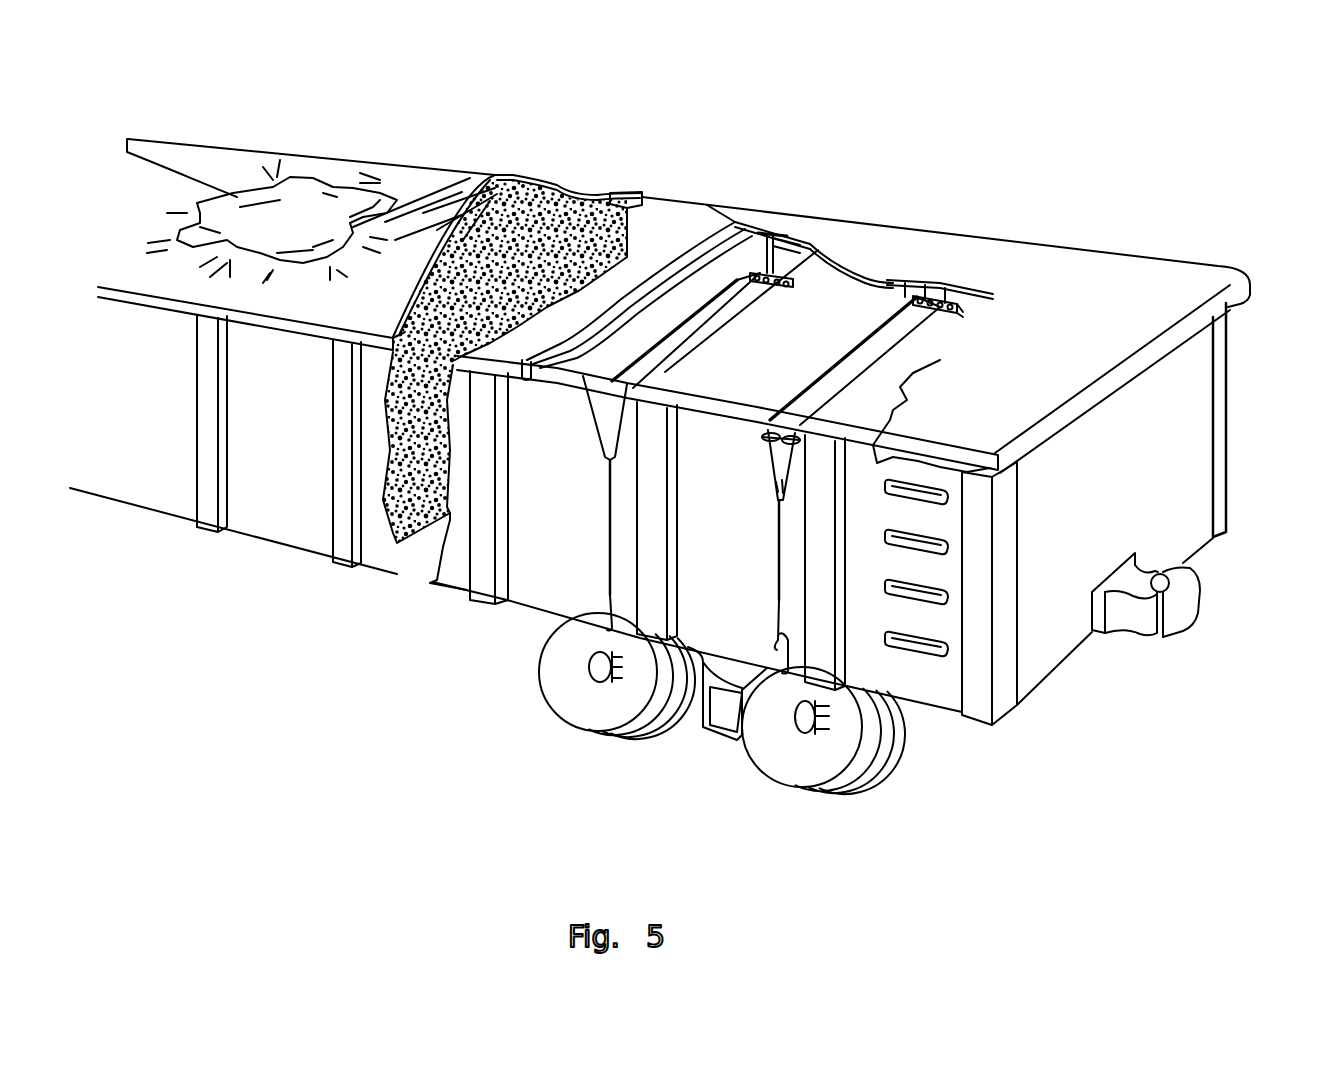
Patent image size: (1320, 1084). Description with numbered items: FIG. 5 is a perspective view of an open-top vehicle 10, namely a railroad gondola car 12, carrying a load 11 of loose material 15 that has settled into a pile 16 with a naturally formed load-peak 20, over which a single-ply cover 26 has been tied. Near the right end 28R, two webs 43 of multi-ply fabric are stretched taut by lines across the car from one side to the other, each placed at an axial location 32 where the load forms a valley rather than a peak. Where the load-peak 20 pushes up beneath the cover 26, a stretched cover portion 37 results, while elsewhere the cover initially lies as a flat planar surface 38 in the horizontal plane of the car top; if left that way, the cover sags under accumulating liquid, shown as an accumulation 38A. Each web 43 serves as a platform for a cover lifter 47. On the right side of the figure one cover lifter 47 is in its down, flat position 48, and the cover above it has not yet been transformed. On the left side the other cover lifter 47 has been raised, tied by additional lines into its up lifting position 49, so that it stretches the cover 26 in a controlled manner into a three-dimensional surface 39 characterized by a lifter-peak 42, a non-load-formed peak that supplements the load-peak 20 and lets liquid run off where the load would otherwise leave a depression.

The open-top vehicle 10 is at (1200, 338).
The load 11 is at (408, 548).
The gondola car 12 is at (138, 485).
The loose material 15 is at (575, 230).
The pile 16 is at (560, 213).
The load-peak 20 is at (500, 172).
The cover 26 is at (178, 153).
The right end 28R is at (1023, 665).
The axial location 32 is at (590, 507).
The stretched cover portion 37 is at (730, 220).
The planar surface 38 is at (135, 277).
The accumulation 38A is at (300, 203).
The three-dimensional surface 39 is at (885, 233).
The lifter-peak 42 is at (793, 220).
The web 43 is at (643, 367).
The cover lifter 47 is at (887, 277).
The flat position 48 is at (963, 317).
The lifting position 49 is at (877, 240).